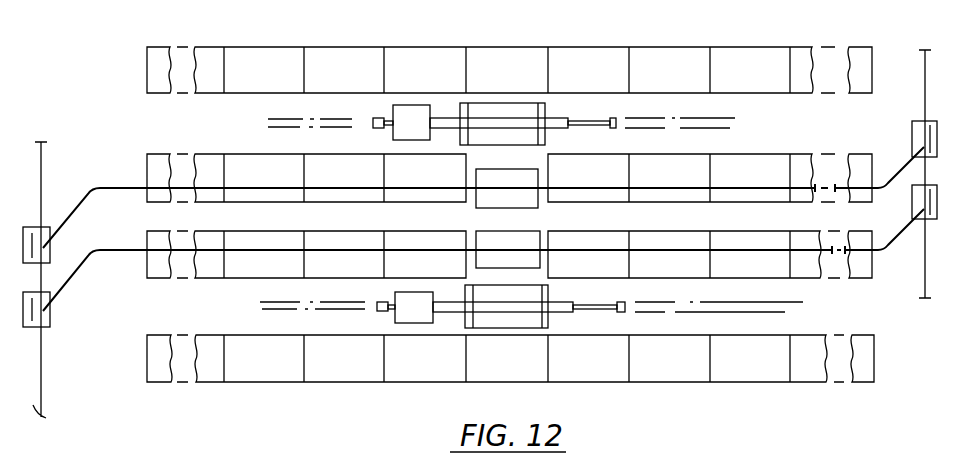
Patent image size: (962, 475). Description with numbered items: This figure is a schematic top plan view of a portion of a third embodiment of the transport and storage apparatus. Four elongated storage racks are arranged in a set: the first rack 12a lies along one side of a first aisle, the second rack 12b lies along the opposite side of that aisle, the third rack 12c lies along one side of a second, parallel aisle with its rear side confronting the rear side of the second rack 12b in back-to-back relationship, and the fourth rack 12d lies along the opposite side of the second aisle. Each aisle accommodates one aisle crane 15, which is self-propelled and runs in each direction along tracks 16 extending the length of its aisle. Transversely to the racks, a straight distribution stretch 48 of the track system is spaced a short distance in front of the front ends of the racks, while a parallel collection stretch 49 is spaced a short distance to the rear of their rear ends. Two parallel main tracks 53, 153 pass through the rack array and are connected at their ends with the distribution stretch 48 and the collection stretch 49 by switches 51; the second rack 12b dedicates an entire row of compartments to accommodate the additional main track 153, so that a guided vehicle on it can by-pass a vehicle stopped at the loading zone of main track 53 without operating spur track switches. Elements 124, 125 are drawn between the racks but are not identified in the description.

The first rack 12a is at (874, 372).
The second rack 12b is at (872, 280).
The third rack 12c is at (872, 157).
The fourth rack 12d is at (875, 48).
The aisle crane 15 is at (548, 112).
The track 16 is at (304, 120).
The distribution stretch 48 is at (41, 393).
The collection stretch 49 is at (925, 89).
The switch 51 is at (45, 292).
The main track 53 is at (760, 188).
The main track 153 is at (722, 250).
The block 124 is at (545, 207).
The block 125 is at (488, 230).